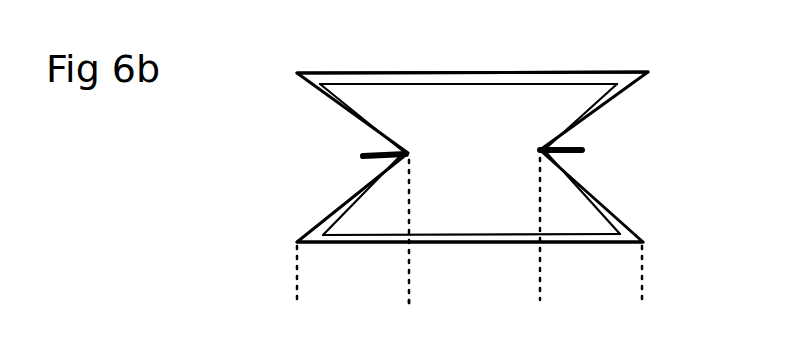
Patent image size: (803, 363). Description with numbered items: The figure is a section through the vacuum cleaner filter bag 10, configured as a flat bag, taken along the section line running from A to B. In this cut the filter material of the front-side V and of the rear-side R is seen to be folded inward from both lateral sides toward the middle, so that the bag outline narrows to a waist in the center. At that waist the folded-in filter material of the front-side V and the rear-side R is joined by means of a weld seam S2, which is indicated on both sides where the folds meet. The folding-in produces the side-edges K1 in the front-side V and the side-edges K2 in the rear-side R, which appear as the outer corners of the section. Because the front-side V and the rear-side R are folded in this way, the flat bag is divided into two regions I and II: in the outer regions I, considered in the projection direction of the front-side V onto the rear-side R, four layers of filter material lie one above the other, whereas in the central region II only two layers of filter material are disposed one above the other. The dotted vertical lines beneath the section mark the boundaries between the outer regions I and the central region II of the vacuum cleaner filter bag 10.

The vacuum cleaner filter bag 10 is at (350, 63).
The side-edge K1 is at (288, 74).
The side-edge K2 is at (285, 245).
The front-side V is at (482, 64).
The rear-side R is at (494, 256).
The weld seam S2 is at (343, 157).
The section line end point A is at (255, 226).
The section line end point B is at (678, 220).
The region I is at (337, 272).
The region II is at (476, 302).